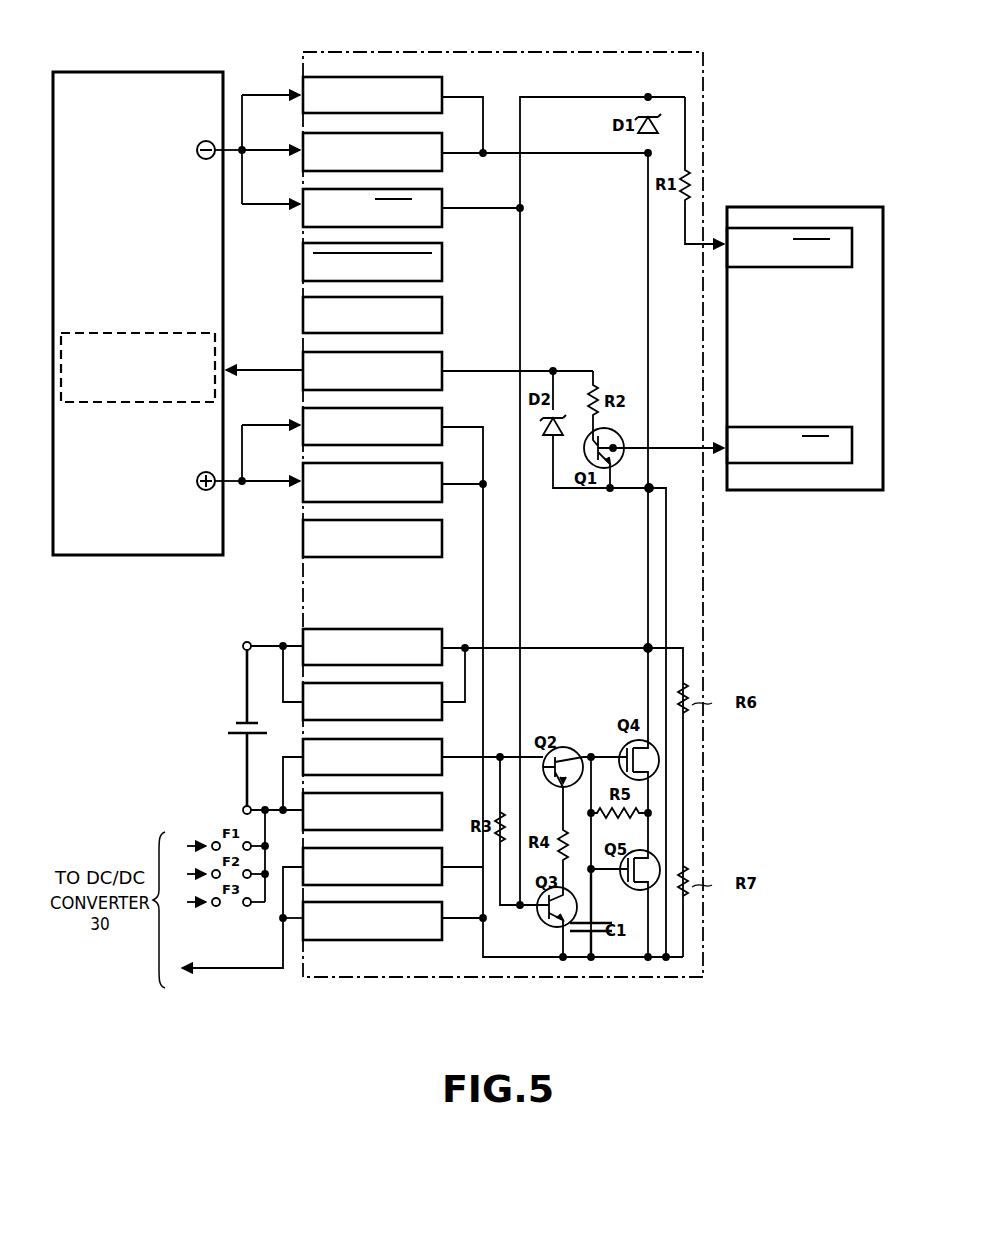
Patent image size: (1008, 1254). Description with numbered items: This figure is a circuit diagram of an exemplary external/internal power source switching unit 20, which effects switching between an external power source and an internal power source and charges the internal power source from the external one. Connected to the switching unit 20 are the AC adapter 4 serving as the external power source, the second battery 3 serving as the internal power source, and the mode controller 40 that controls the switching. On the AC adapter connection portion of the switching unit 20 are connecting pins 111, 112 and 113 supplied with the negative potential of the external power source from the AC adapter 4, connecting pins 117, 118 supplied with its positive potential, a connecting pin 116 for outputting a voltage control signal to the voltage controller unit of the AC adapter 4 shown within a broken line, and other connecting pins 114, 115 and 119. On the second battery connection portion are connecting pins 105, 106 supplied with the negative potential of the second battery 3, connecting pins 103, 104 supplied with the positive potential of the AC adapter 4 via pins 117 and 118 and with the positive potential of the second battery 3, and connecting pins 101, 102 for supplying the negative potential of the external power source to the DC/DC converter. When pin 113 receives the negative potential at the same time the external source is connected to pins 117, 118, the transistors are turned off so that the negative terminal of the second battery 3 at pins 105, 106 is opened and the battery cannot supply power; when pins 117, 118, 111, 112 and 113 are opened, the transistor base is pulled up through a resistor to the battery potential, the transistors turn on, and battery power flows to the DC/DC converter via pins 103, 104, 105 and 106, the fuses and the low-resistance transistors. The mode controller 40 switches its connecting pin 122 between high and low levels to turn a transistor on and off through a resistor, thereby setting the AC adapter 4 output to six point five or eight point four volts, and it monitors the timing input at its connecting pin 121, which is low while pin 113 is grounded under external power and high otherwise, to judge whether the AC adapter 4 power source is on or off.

The second battery 3 is at (220, 720).
The AC adapter 4 is at (152, 72).
The external/internal power source switching unit 20 is at (512, 64).
The mode controller 40 is at (806, 208).
The connecting pin 101 is at (384, 940).
The connecting pin 102 is at (304, 874).
The connecting pin 103 is at (304, 806).
The connecting pin 104 is at (302, 748).
The connecting pin 105 is at (442, 690).
The connecting pin 106 is at (392, 629).
The connecting pin 111 is at (442, 78).
The connecting pin 112 is at (442, 168).
The connecting pin 113 is at (442, 222).
The connecting pin 114 is at (442, 266).
The connecting pin 115 is at (442, 316).
The connecting pin 116 is at (442, 356).
The connecting pin 117 is at (442, 413).
The connecting pin 118 is at (303, 492).
The connecting pin 119 is at (395, 557).
The connecting pin 121 is at (782, 267).
The connecting pin 122 is at (804, 427).